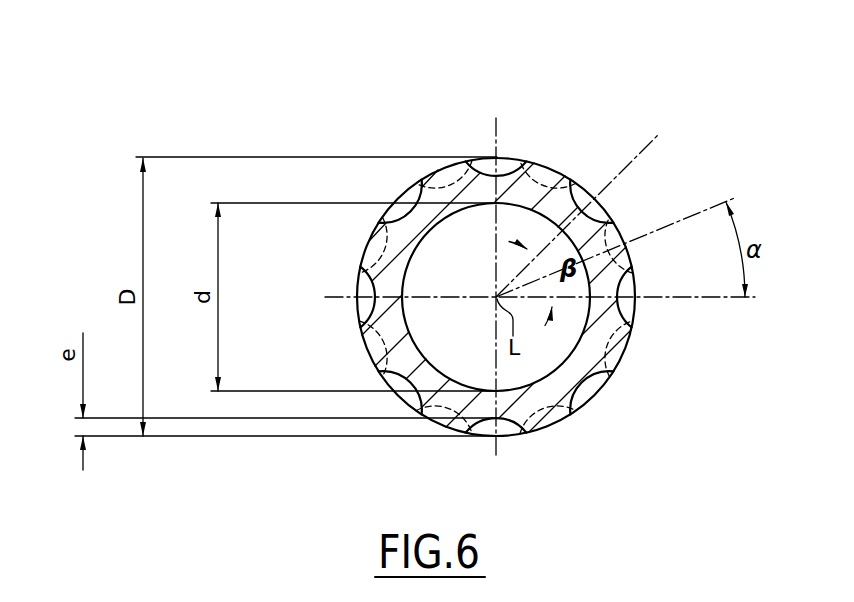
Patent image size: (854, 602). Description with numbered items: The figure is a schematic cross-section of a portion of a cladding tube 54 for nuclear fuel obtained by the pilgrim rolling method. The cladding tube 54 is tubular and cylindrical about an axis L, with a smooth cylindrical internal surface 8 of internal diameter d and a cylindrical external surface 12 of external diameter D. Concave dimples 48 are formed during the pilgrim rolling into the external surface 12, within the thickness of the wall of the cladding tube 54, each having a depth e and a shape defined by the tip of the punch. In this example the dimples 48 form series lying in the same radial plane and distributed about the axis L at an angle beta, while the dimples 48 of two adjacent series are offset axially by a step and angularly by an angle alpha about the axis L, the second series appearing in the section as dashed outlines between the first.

The cladding tube 54 is at (366, 116).
The external surface 12 is at (549, 165).
The internal surface 8 is at (496, 205).
The dimples 48 is at (492, 174).